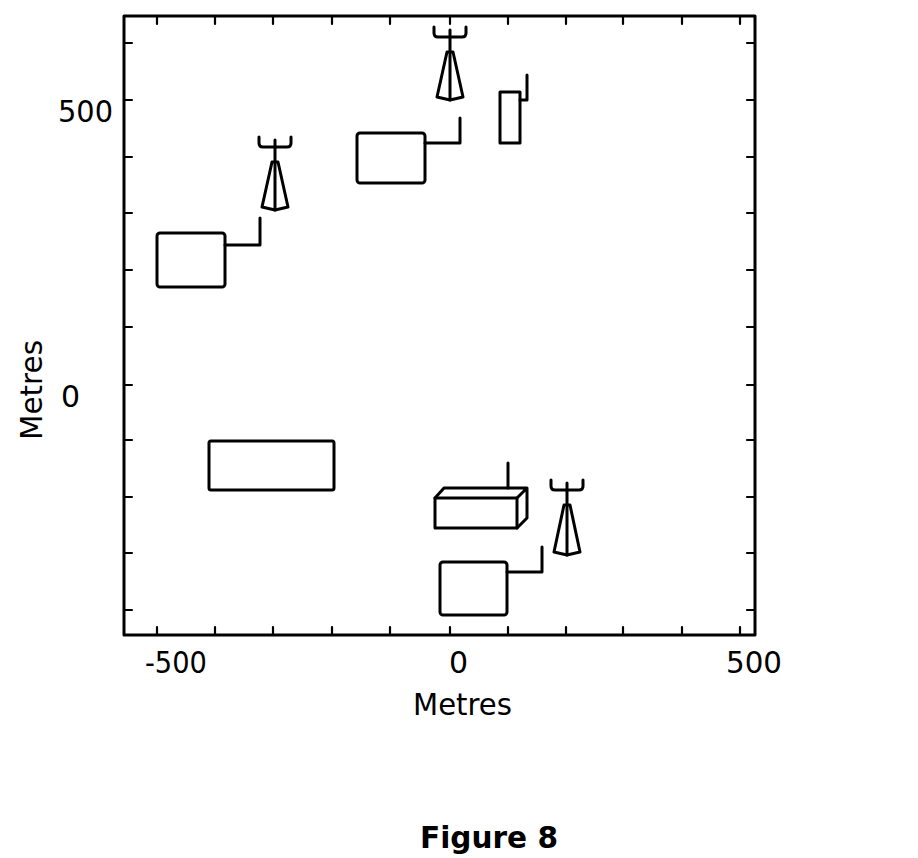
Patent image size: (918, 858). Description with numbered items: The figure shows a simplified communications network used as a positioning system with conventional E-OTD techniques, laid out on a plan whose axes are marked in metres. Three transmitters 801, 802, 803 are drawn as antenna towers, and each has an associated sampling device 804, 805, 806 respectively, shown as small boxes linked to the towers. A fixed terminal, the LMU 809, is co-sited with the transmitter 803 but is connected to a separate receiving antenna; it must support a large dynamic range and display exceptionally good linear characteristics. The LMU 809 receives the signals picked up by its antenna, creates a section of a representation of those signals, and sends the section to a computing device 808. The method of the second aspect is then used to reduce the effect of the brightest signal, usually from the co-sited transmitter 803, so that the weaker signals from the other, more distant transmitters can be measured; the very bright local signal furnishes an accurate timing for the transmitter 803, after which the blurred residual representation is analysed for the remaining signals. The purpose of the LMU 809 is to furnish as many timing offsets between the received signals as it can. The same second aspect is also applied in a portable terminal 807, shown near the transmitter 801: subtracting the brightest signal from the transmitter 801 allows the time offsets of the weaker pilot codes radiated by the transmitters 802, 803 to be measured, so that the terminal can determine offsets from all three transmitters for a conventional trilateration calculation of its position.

The transmitter 801 is at (433, 57).
The transmitter 802 is at (300, 200).
The transmitter 803 is at (592, 503).
The sampling device 804 is at (408, 150).
The sampling device 805 is at (208, 252).
The sampling device 806 is at (491, 581).
The portable terminal 807 is at (532, 108).
The computing device 808 is at (271, 465).
The fixed terminal (LMU) 809 is at (469, 485).